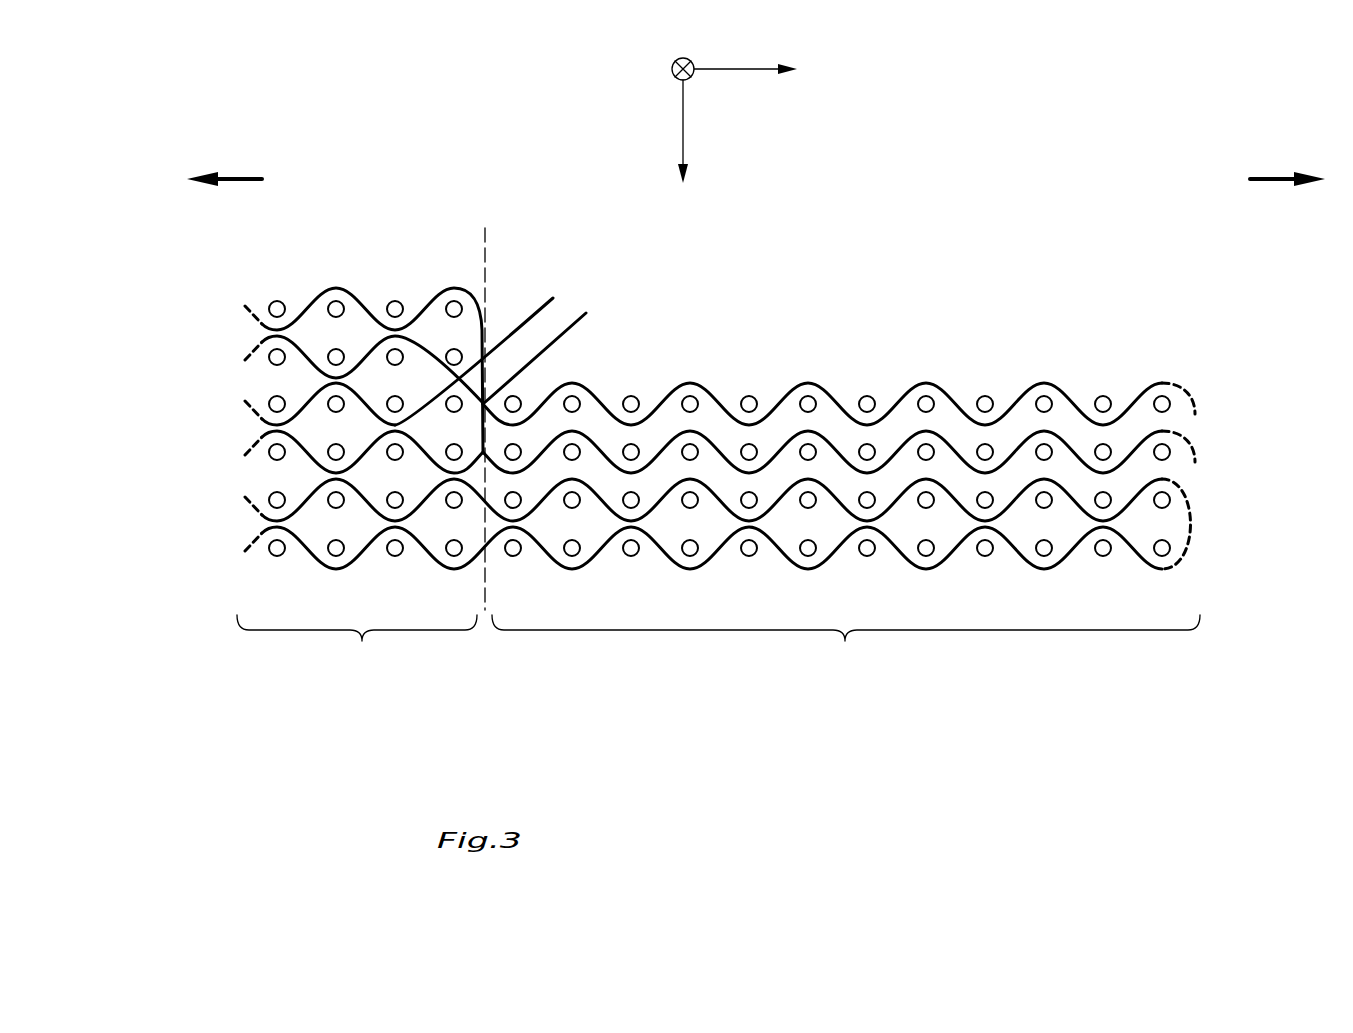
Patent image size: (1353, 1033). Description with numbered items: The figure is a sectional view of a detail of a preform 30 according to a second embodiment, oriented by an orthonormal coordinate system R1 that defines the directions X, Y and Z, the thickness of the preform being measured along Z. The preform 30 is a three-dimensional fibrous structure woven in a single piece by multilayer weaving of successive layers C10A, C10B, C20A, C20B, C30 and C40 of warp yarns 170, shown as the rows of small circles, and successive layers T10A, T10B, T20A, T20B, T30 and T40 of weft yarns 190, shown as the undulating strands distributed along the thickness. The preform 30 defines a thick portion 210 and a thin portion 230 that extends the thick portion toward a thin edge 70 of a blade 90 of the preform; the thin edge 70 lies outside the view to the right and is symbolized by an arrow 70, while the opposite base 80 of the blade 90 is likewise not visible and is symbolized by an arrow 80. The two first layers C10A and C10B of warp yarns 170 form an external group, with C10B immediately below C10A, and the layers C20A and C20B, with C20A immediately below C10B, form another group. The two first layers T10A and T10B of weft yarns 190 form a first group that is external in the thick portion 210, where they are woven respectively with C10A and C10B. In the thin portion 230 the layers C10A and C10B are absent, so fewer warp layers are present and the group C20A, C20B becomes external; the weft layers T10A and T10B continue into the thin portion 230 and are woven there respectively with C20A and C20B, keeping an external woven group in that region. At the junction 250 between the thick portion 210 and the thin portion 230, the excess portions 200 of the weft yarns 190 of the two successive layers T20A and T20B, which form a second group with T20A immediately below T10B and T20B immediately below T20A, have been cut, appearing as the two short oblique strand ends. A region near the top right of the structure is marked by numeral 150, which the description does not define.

The preform 30 is at (877, 228).
The thin edge 70 is at (1287, 165).
The base 80 is at (224, 165).
The blade 90 is at (937, 522).
The tube bundle region 150 is at (1013, 320).
The warp yarns 170 is at (1105, 396).
The weft yarns 190 is at (684, 566).
The excess portions 200 is at (527, 317).
The thick portion 210 is at (357, 644).
The thin portion 230 is at (846, 644).
The junction 250 is at (480, 586).
The orthonormal coordinate system R1 is at (736, 113).
The first layer of weft yarns T10A is at (335, 288).
The first layer of weft yarns T10B is at (366, 348).
The layer of weft yarns T20A is at (368, 398).
The layer of weft yarns T20B is at (420, 443).
The layer of weft yarns T30 is at (1194, 490).
The layer of weft yarns T40 is at (1187, 558).
The first layer of warp yarns C10A is at (208, 310).
The first layer of warp yarns C10B is at (208, 355).
The layer of warp yarns C20A is at (208, 404).
The layer of warp yarns C20B is at (208, 451).
The layer of warp yarns C30 is at (208, 501).
The layer of warp yarns C40 is at (208, 546).